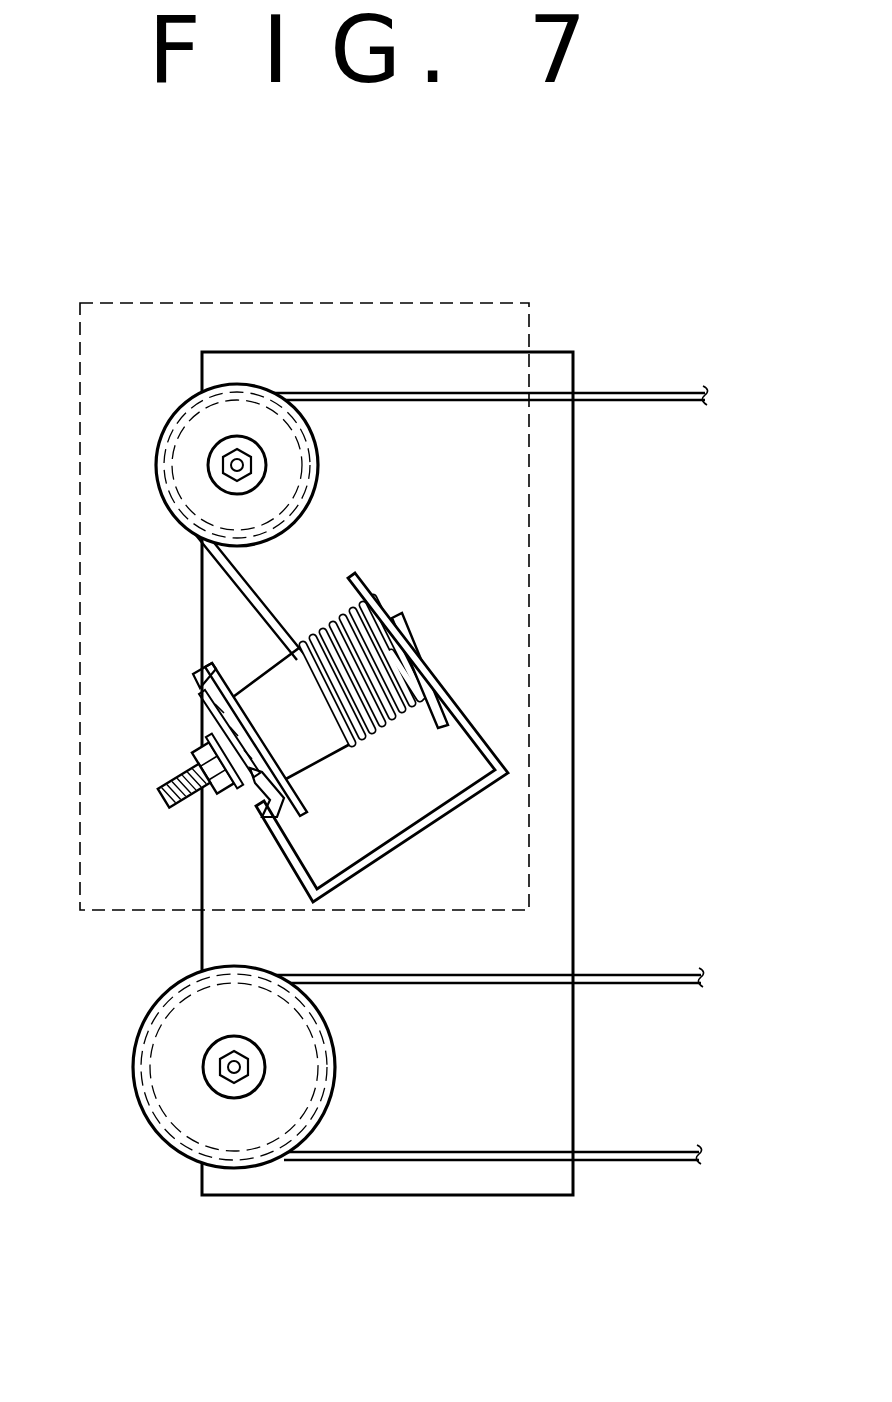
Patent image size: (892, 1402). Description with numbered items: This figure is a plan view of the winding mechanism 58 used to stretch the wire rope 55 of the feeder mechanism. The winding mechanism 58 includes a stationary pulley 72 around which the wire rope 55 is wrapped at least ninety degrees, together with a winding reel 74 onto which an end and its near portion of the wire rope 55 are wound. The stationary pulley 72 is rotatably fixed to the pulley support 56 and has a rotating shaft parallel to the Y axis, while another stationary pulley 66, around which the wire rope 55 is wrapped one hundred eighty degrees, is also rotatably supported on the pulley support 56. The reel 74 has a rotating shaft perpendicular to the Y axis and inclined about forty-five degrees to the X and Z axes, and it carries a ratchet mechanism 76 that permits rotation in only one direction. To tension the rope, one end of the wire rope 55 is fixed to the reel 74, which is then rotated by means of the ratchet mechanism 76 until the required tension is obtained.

The wire rope 55 is at (664, 392).
The pulley support 56 is at (430, 1188).
The winding mechanism 58 is at (143, 306).
The stationary pulley 66 is at (133, 1067).
The stationary pulley 72 is at (318, 462).
The winding reel 74 is at (313, 750).
The ratchet mechanism 76 is at (208, 669).